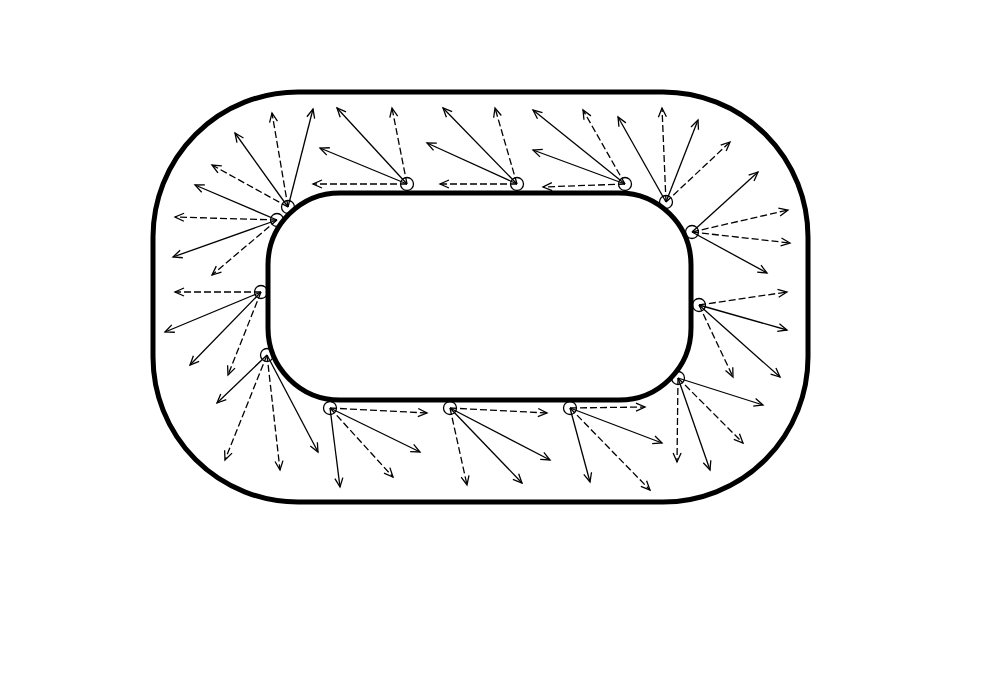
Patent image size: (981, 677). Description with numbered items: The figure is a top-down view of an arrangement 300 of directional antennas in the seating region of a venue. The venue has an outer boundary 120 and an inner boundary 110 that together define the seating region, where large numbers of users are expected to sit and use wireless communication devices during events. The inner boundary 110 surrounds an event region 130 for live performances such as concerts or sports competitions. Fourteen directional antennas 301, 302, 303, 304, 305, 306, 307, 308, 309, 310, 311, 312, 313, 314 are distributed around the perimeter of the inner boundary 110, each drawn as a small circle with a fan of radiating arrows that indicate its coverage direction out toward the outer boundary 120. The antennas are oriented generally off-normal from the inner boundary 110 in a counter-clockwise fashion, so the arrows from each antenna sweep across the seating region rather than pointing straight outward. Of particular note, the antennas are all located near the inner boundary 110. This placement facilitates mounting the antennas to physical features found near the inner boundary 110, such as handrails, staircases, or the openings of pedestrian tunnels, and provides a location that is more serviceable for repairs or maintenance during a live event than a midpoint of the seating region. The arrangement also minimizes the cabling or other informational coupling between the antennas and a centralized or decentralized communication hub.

The arrangement and orientation of directional antennas 300 is at (118, 80).
The outer boundary 120 is at (805, 212).
The inner boundary 110 is at (348, 197).
The event region 130 is at (432, 283).
The directional antenna 301 is at (294, 213).
The directional antenna 302 is at (408, 192).
The directional antenna 303 is at (516, 193).
The directional antenna 304 is at (621, 192).
The directional antenna 305 is at (661, 210).
The directional antenna 306 is at (686, 238).
The directional antenna 307 is at (692, 305).
The directional antenna 308 is at (673, 372).
The directional antenna 309 is at (568, 401).
The directional antenna 310 is at (449, 401).
The directional antenna 311 is at (332, 401).
The directional antenna 312 is at (274, 352).
The directional antenna 313 is at (269, 293).
The directional antenna 314 is at (282, 226).